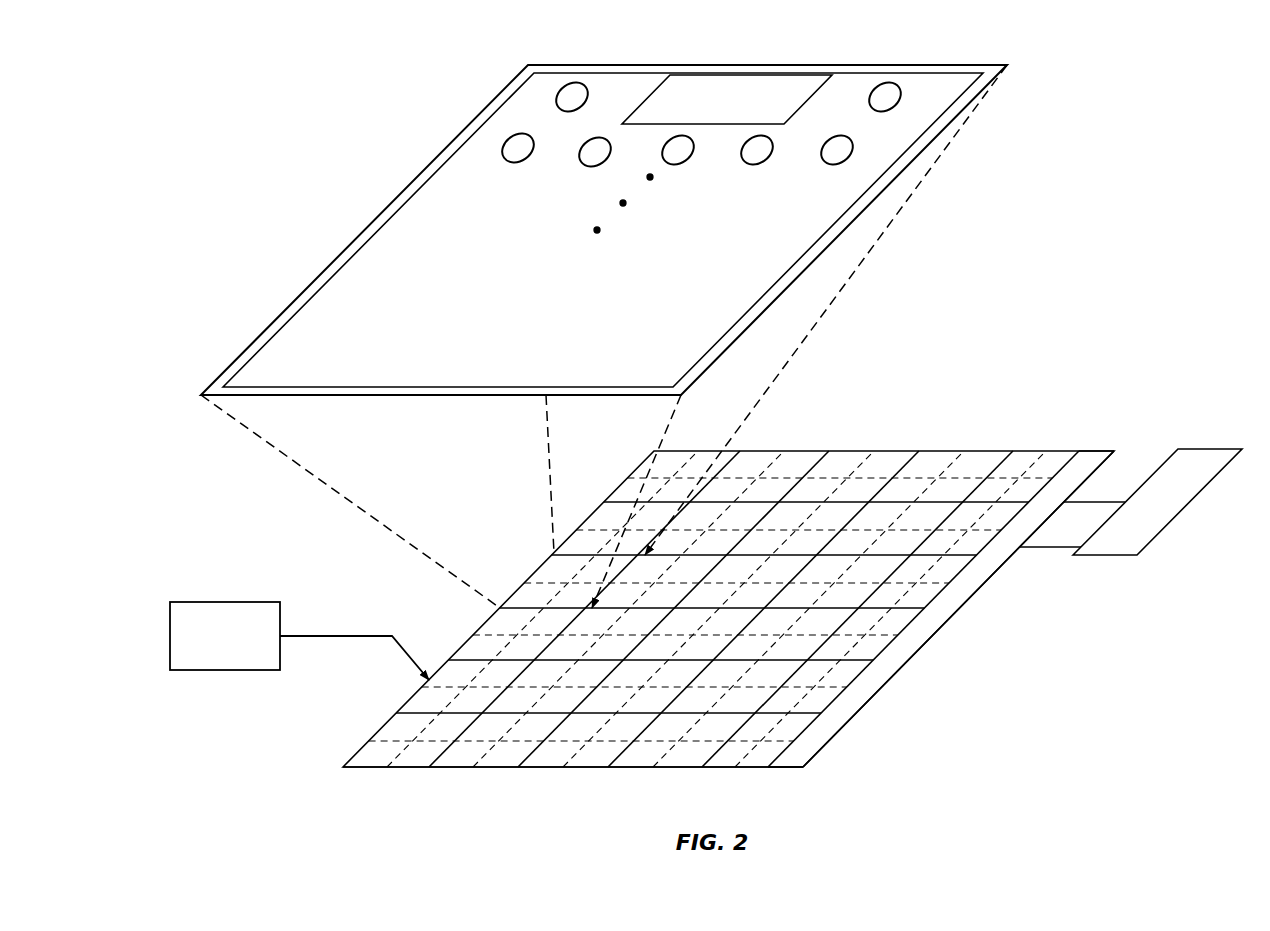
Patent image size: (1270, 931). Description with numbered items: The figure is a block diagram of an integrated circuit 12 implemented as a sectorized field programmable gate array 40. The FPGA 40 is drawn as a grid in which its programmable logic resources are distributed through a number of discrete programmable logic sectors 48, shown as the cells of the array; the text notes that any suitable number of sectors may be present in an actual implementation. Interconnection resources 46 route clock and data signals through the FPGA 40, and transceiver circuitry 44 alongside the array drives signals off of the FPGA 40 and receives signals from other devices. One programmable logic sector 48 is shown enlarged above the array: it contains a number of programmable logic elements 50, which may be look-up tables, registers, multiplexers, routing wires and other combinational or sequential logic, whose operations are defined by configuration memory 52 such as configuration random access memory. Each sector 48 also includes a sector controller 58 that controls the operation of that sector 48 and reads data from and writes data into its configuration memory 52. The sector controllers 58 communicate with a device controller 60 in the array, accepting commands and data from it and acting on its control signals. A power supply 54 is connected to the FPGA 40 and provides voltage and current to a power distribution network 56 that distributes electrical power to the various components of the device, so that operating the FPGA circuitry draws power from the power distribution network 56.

The programmable logic sector 48 is at (664, 407).
The interconnection resources 46 is at (367, 227).
The programmable logic elements 50 is at (738, 136).
The configuration memory 52 is at (580, 81).
The sector controller 58 is at (743, 80).
The field programmable gate array 40 is at (728, 580).
The integrated circuit 12 is at (958, 419).
The power distribution network 56 is at (418, 734).
The device controller 60 is at (579, 768).
The transceiver circuitry 44 is at (1188, 507).
The power supply 54 is at (227, 598).